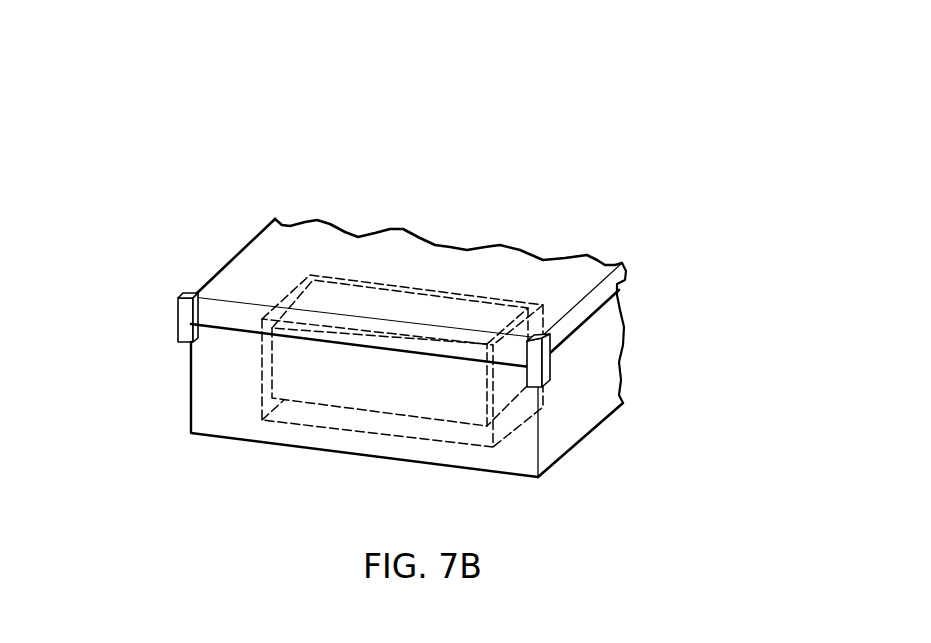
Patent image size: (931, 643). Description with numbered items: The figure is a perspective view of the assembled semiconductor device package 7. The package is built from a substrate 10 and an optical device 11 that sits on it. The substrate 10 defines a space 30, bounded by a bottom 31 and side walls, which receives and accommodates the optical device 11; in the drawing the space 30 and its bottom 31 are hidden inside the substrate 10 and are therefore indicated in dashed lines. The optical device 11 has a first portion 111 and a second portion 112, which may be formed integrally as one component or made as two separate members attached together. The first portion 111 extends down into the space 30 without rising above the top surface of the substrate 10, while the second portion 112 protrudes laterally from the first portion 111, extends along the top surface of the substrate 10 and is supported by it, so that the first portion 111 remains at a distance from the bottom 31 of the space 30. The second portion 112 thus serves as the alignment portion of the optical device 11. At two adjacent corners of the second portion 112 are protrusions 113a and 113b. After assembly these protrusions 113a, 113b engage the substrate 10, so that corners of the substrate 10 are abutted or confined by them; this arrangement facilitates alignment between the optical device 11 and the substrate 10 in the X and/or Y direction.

The semiconductor device package 7 is at (733, 180).
The substrate 10 is at (648, 361).
The optical device 11 is at (603, 226).
The first portion 111 is at (352, 398).
The second portion 112 is at (629, 288).
The protrusion 113a is at (185, 320).
The protrusion 113b is at (548, 362).
The space 30 is at (507, 420).
The bottom 31 is at (452, 437).